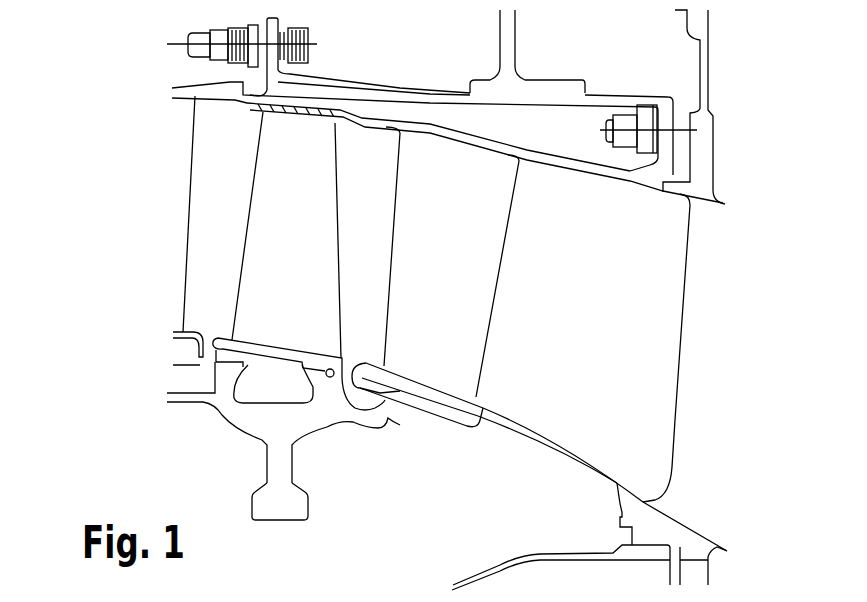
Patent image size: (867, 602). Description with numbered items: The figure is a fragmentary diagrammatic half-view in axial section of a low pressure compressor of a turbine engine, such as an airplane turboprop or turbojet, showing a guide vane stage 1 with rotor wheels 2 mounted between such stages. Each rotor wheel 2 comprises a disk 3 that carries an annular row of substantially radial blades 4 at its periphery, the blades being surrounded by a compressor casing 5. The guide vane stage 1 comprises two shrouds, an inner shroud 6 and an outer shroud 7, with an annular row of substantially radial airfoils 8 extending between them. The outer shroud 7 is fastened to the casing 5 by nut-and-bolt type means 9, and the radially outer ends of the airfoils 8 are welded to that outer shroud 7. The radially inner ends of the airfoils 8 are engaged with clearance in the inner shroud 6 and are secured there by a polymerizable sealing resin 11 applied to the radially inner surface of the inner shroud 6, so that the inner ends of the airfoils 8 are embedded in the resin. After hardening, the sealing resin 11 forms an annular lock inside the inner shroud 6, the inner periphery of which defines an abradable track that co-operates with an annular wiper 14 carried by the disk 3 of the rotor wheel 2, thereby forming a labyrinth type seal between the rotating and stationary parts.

The guide vane stage 1 is at (150, 370).
The rotor wheel 2 is at (218, 433).
The disk 3 is at (287, 522).
The blade 4 is at (260, 258).
The compressor casing 5 is at (340, 92).
The inner shroud 6 is at (518, 425).
The outer shroud 7 is at (572, 167).
The airfoil 8 is at (473, 290).
The nut-and-bolt type means 9 is at (648, 117).
The sealing resin 11 is at (467, 417).
The annular wiper 14 is at (400, 417).